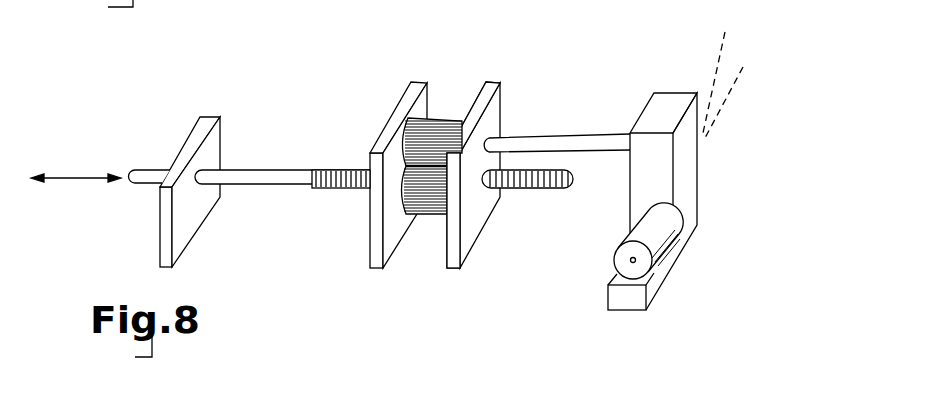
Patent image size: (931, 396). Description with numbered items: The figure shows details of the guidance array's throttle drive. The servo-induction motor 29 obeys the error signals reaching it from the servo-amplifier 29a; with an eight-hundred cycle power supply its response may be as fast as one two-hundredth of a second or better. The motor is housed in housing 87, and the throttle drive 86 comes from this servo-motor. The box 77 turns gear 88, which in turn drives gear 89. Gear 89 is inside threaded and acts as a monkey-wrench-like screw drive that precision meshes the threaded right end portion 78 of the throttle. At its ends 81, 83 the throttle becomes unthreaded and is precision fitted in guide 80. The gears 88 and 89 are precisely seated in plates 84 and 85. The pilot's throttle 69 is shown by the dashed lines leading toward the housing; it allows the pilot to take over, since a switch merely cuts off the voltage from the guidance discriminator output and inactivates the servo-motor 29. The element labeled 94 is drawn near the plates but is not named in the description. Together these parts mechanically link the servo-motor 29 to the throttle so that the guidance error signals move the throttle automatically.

The servo-induction motor 29 is at (615, 257).
The servo-amplifier 29a is at (607, 297).
The pilot's throttle 69 is at (726, 72).
The box 77 is at (547, 137).
The threaded right end portion of throttle 78 is at (348, 193).
The guide 80 is at (158, 257).
The unthreaded throttle end 81 is at (162, 166).
The unthreaded throttle end 83 is at (280, 188).
The plate 84 is at (370, 270).
The plate 85 is at (458, 270).
The throttle drive 86 is at (628, 203).
The housing 87 is at (700, 173).
The gear 88 is at (430, 120).
The gear 89 is at (427, 217).
The support frame 94 is at (463, 103).